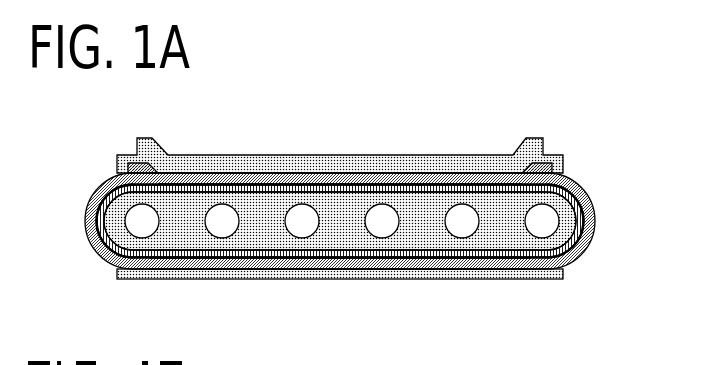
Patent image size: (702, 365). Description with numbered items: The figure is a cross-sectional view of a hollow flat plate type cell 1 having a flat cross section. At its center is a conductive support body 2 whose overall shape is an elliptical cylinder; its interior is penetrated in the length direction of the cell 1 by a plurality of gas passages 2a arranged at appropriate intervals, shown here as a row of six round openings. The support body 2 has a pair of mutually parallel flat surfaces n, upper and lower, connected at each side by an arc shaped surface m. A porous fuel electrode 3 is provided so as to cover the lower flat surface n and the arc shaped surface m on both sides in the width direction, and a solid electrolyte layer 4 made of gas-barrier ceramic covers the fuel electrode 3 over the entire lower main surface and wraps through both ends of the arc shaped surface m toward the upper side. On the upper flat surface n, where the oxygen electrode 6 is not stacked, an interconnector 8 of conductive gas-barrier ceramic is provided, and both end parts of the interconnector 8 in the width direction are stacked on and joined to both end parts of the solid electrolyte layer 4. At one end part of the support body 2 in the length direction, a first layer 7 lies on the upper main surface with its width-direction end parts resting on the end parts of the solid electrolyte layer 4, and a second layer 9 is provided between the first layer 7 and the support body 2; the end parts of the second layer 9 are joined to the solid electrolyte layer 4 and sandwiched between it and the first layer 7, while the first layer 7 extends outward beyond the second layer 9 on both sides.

The cell 1 is at (576, 112).
The conductive support body 2 is at (257, 233).
The gas passages 2a is at (215, 217).
The fuel electrode 3 is at (573, 258).
The solid electrolyte layer 4 is at (478, 258).
The oxygen electrode 6 is at (525, 272).
The first layer 7 is at (300, 180).
The interconnector 8 is at (395, 158).
The second layer 9 is at (386, 190).
The flat surfaces n is at (418, 193).
The arc shaped surface m is at (97, 222).